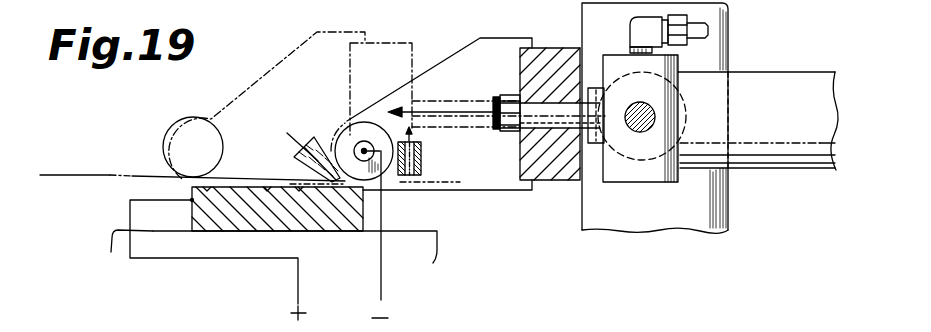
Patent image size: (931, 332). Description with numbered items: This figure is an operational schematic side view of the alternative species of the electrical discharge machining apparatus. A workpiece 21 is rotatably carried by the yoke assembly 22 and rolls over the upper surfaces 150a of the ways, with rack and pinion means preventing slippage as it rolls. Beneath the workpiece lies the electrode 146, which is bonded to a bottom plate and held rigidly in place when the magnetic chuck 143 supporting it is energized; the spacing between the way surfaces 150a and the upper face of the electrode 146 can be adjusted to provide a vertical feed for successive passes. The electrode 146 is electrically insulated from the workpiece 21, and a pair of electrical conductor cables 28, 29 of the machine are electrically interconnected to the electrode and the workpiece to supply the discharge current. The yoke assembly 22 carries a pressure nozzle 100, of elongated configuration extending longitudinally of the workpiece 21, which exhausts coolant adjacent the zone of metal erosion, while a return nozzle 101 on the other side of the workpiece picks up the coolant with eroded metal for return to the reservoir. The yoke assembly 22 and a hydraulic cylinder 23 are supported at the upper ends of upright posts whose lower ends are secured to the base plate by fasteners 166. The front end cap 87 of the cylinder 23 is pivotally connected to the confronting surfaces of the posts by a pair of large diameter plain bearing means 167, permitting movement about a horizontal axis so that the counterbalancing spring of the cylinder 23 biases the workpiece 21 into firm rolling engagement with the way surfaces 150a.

The upper surfaces of the ways 150a is at (117, 175).
The pressure nozzle 100 is at (320, 144).
The workpiece 21 is at (362, 124).
The yoke assembly 22 is at (531, 12).
The return nozzle 101 is at (424, 156).
The electrode 146 is at (365, 217).
The magnetic chuck 143 is at (432, 229).
The electrical conductor cable 29 is at (206, 258).
The electrical conductor cable 28 is at (382, 286).
The plain bearing means 167 is at (689, 108).
The front end cap 87 is at (655, 183).
The hydraulic cylinder 23 is at (792, 162).
The fasteners 166 is at (730, 210).